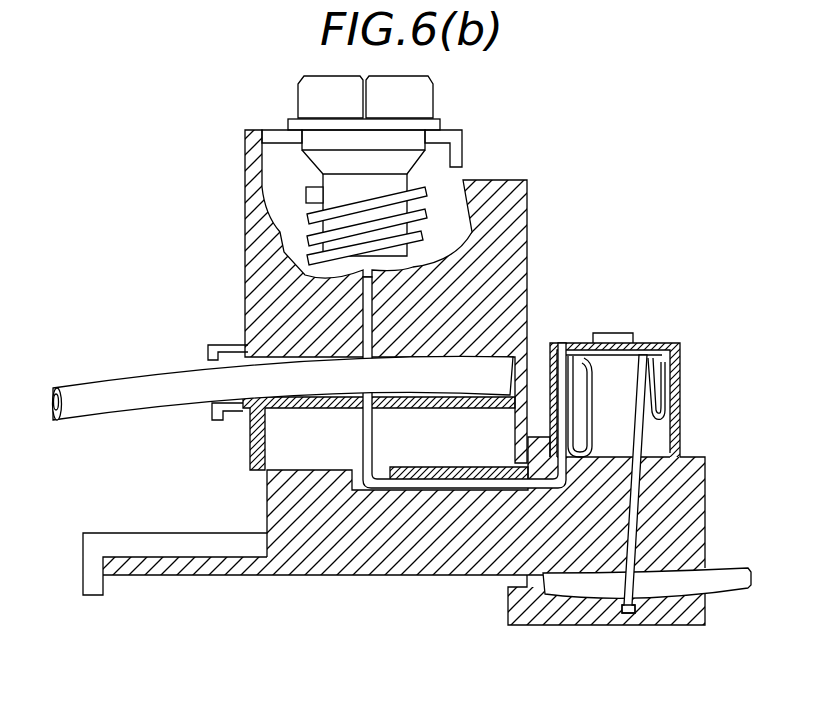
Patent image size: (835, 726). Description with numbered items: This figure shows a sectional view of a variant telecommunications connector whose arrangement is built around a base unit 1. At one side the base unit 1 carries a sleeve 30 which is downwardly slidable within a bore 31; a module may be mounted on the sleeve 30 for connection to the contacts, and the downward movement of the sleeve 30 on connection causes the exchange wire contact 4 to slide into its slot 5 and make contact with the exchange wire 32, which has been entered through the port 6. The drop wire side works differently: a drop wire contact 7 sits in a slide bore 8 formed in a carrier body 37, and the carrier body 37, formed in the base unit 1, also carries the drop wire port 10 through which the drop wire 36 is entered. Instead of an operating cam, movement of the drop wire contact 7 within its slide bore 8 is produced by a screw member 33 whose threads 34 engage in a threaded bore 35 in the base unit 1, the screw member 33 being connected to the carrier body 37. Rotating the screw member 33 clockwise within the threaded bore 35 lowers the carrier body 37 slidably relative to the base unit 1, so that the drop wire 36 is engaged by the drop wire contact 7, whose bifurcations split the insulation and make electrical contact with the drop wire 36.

The base unit 1 is at (264, 586).
The exchange wire contact 4 is at (682, 413).
The slot 5 is at (630, 623).
The port 6 is at (703, 598).
The drop wire contact 7 is at (267, 490).
The slide bore 8 is at (362, 302).
The drop wire port 10 is at (283, 413).
The sleeve 30 is at (682, 373).
The bore 31 is at (645, 437).
The exchange wire 32 is at (730, 567).
The screw member 33 is at (418, 100).
The threads 34 is at (430, 176).
The threaded bore 35 is at (425, 236).
The drop wire 36 is at (135, 380).
The carrier body 37 is at (500, 223).